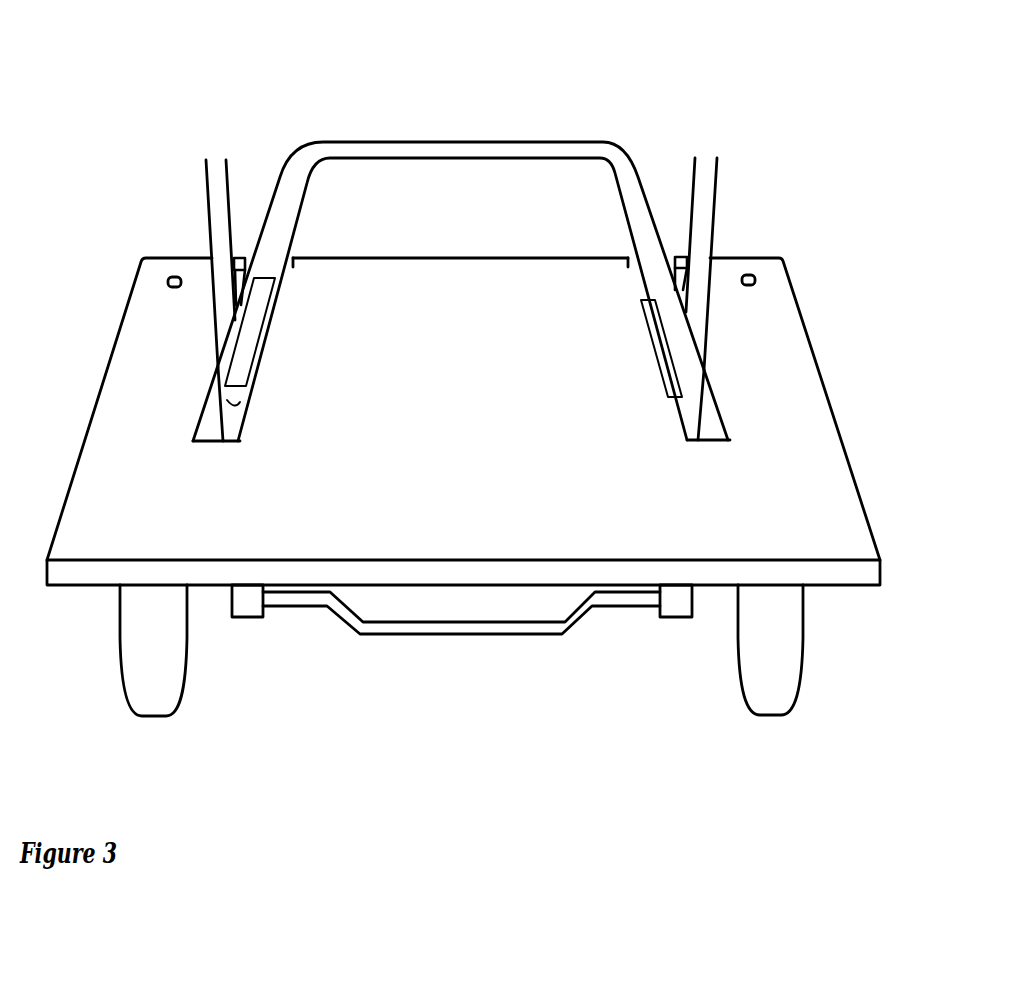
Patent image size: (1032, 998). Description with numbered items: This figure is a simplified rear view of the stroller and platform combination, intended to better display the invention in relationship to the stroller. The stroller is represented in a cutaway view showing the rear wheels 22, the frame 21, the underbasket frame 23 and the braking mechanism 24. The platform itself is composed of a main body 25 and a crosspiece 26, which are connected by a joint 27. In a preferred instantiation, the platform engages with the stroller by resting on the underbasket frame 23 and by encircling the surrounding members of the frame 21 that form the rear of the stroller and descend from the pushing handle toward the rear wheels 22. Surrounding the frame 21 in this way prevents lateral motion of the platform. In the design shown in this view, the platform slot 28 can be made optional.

The frame 21 is at (707, 155).
The rear wheels 22 is at (762, 662).
The underbasket frame 23 is at (495, 144).
The braking mechanism 24 is at (452, 628).
The main body 25 is at (733, 487).
The crosspiece 26 is at (675, 285).
The joint 27 is at (757, 280).
The platform slot 28 is at (710, 418).